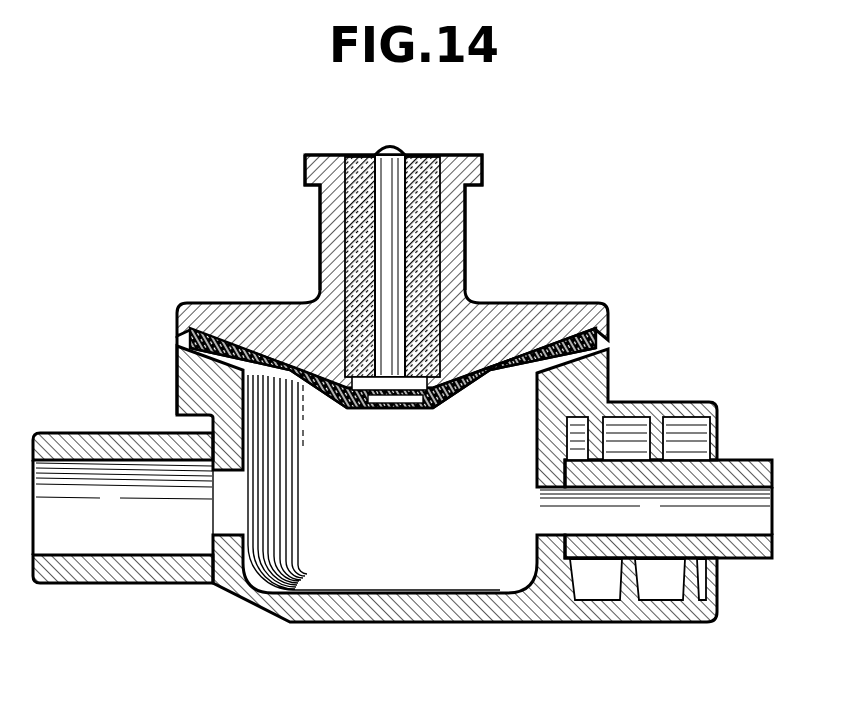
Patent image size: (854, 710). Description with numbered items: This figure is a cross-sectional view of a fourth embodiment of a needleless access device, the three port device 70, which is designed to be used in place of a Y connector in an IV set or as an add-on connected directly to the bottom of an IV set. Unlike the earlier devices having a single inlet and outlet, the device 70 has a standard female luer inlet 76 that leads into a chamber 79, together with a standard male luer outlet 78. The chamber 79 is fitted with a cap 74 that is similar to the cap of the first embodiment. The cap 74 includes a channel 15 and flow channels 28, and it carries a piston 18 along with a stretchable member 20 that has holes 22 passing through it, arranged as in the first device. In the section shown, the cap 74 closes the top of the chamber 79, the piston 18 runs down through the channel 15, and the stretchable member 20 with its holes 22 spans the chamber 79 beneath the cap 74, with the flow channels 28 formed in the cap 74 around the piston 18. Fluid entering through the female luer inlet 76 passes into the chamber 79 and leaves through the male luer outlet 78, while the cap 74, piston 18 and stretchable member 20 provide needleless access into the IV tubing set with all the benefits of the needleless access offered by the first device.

The channel 15 is at (465, 204).
The piston 18 is at (323, 228).
The stretchable member 20 is at (262, 345).
The holes 22 is at (305, 382).
The flow channels 28 is at (447, 342).
The needleless access device 70 is at (618, 338).
The cap 74 is at (530, 305).
The female luer inlet 76 is at (58, 583).
The male luer outlet 78 is at (740, 560).
The chamber 79 is at (313, 565).